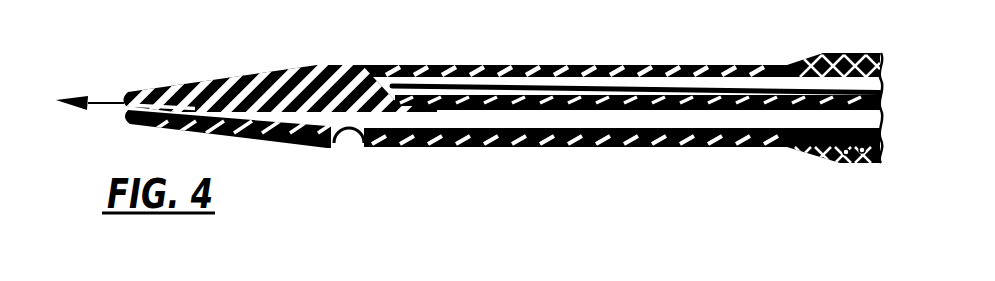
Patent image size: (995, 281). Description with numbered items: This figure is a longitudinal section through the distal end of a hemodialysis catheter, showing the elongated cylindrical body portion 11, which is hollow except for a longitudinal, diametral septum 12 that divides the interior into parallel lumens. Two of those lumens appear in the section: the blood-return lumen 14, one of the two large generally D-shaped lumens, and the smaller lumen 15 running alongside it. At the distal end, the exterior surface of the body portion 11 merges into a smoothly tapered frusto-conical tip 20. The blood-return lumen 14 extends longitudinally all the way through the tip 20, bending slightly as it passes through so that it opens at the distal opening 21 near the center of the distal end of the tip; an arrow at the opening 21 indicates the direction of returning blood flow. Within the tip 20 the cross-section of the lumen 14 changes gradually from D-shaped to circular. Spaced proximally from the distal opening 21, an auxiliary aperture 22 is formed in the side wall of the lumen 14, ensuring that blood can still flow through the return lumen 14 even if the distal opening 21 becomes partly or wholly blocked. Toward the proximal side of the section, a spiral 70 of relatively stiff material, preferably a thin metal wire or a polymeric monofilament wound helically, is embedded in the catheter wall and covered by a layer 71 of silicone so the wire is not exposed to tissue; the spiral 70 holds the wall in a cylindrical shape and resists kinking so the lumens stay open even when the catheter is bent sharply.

The cylindrical body portion 11 is at (359, 64).
The septum 12 is at (663, 110).
The blood-return lumen 14 is at (513, 124).
The lumen 15 is at (505, 86).
The frusto-conical tip 20 is at (177, 84).
The distal opening 21 is at (123, 104).
The auxiliary aperture 22 is at (347, 144).
The spiral 70 is at (815, 156).
The silicone layer 71 is at (844, 160).